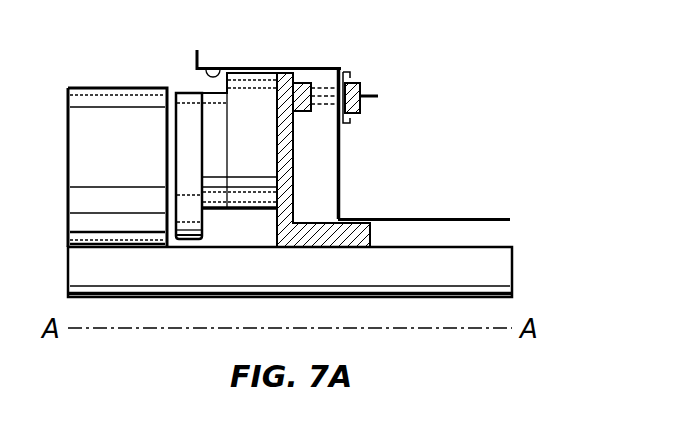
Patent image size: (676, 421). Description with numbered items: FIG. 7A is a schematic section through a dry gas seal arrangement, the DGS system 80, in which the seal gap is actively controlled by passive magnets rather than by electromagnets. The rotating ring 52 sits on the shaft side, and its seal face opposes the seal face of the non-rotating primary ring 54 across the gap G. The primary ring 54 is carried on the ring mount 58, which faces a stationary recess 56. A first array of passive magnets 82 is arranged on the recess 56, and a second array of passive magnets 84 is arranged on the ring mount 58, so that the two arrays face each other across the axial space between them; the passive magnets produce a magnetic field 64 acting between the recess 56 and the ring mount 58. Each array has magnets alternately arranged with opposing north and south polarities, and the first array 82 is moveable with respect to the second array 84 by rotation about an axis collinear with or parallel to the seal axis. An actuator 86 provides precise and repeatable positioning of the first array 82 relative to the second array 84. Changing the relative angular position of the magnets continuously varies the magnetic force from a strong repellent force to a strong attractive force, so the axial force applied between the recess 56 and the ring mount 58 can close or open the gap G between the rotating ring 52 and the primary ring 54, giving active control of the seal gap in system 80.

The rotating ring 52 is at (74, 126).
The non-rotating primary ring 54 is at (190, 92).
The gap G is at (172, 92).
The recess 56 is at (218, 66).
The ring mount 58 is at (358, 224).
The magnetic field 64 is at (324, 112).
The DGS system 80 is at (389, 27).
The first array of passive magnets 82 is at (352, 83).
The second array of passive magnets 84 is at (304, 84).
The actuator 86 is at (374, 98).